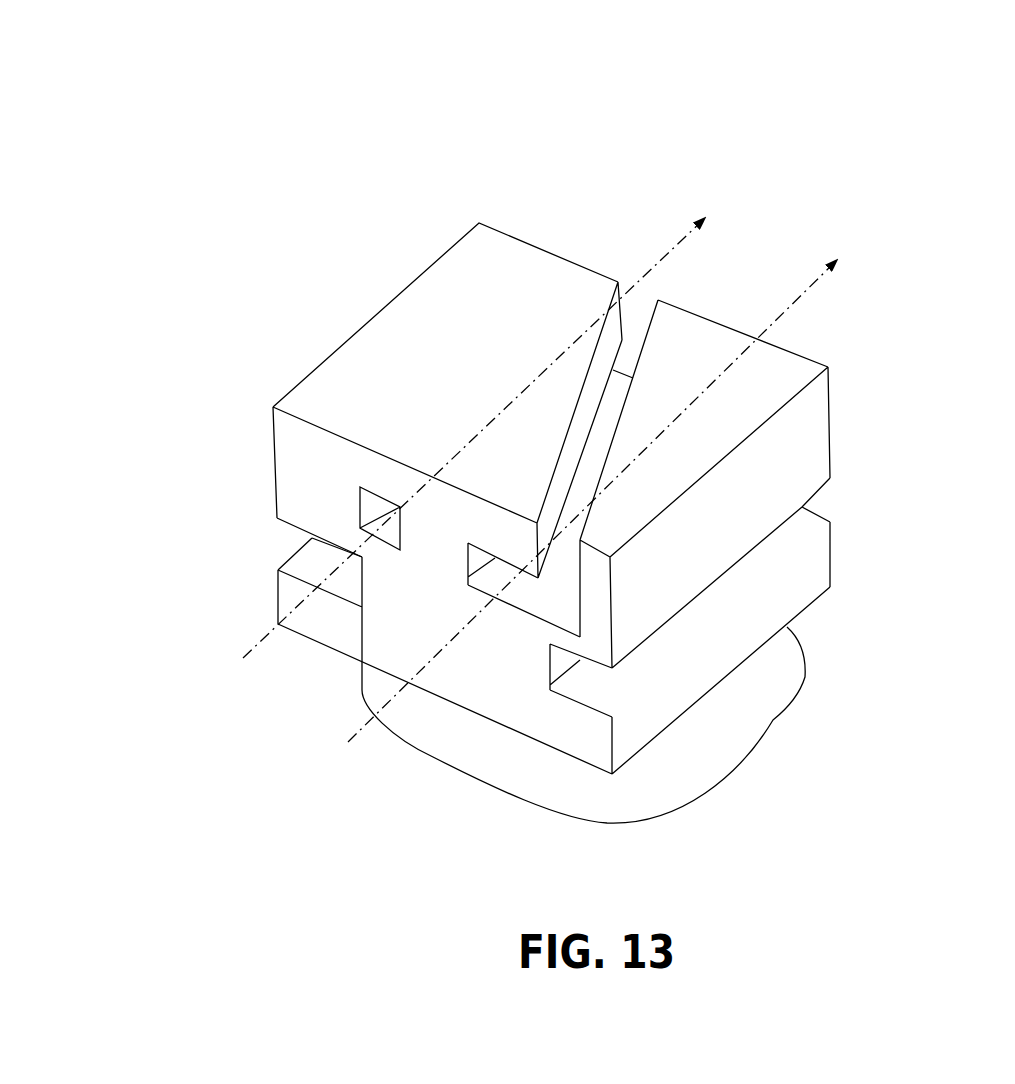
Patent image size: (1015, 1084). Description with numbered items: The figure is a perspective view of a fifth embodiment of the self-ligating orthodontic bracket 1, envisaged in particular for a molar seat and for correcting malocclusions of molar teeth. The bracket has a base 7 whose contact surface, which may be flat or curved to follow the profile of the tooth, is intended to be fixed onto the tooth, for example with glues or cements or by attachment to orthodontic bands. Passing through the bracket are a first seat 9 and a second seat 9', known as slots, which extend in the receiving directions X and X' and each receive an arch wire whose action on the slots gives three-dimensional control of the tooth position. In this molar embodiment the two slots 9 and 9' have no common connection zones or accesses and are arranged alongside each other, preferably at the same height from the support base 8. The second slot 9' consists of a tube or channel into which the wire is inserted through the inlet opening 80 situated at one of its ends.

The self-ligating orthodontic bracket 1 is at (340, 262).
The base 7 is at (757, 690).
The support base 8 is at (420, 783).
The first seat 9 is at (403, 634).
The second seat 9' is at (247, 482).
The inlet opening 80 is at (488, 587).